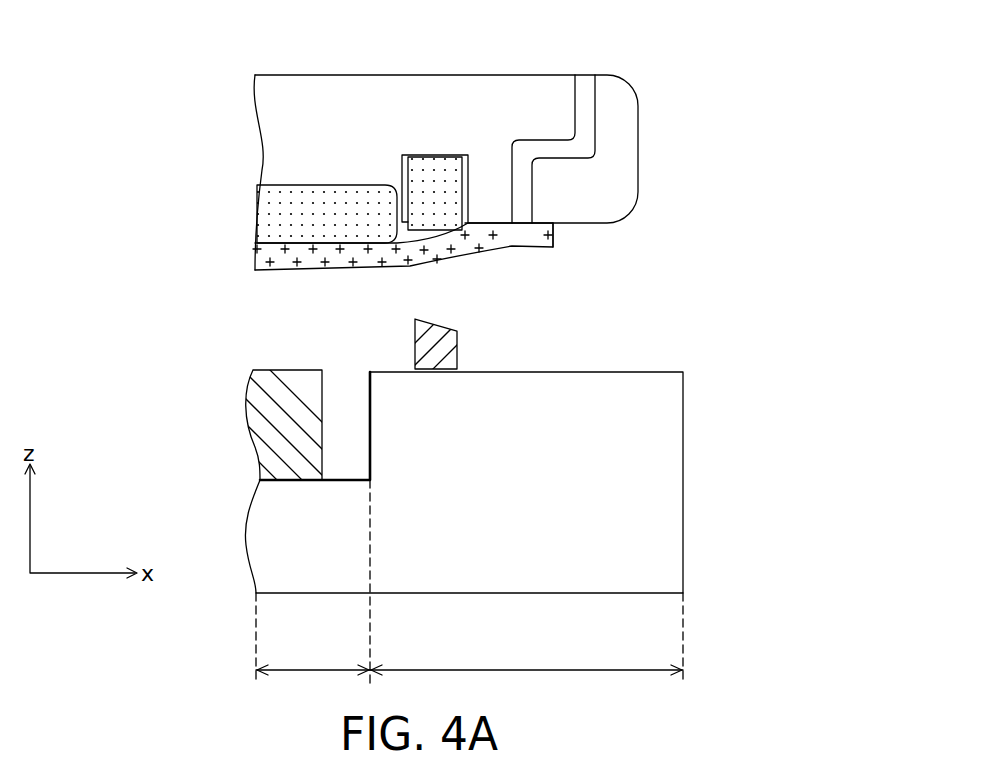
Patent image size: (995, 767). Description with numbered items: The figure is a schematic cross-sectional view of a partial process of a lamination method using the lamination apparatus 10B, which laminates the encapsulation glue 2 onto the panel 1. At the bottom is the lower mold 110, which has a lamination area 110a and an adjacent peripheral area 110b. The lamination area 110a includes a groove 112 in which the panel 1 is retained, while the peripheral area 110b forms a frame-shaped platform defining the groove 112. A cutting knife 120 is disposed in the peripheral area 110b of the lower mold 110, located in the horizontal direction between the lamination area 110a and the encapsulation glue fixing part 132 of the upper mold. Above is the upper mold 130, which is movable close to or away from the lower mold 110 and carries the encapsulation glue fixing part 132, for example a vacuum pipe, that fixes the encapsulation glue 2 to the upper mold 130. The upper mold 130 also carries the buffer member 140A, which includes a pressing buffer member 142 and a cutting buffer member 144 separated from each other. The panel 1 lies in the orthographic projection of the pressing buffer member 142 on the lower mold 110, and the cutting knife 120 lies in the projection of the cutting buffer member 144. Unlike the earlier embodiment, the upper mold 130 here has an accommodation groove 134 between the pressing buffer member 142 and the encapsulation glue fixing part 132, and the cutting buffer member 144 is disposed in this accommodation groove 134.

The upper mold 130 is at (265, 117).
The pressing buffer member 142 is at (265, 208).
The cutting buffer member 144 is at (422, 162).
The accommodation groove 134 is at (436, 168).
The encapsulation glue fixing part 132 is at (517, 236).
The encapsulation glue 2 is at (552, 236).
The buffer member 140A is at (768, 42).
The lower mold 110 is at (272, 540).
The panel 1 is at (292, 433).
The groove 112 is at (368, 417).
The cutting knife 120 is at (437, 357).
The lamination area 110a is at (313, 591).
The peripheral area 110b is at (526, 648).
The lamination apparatus 10B is at (763, 623).